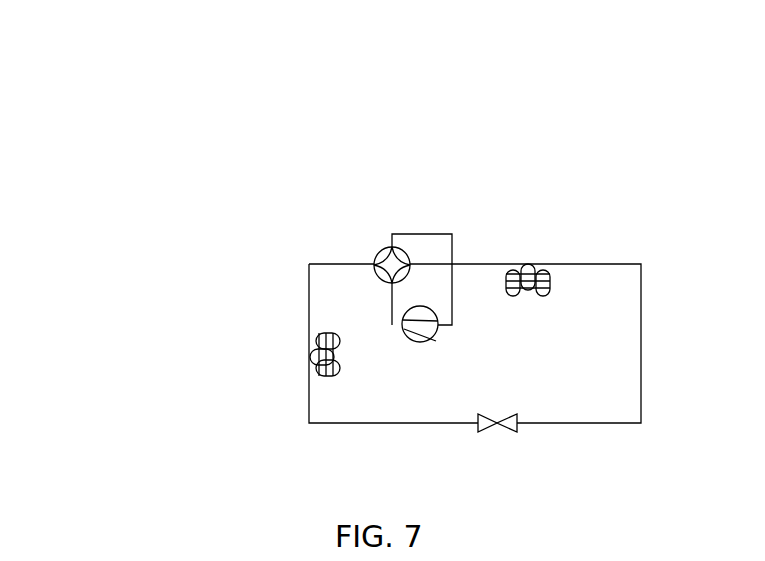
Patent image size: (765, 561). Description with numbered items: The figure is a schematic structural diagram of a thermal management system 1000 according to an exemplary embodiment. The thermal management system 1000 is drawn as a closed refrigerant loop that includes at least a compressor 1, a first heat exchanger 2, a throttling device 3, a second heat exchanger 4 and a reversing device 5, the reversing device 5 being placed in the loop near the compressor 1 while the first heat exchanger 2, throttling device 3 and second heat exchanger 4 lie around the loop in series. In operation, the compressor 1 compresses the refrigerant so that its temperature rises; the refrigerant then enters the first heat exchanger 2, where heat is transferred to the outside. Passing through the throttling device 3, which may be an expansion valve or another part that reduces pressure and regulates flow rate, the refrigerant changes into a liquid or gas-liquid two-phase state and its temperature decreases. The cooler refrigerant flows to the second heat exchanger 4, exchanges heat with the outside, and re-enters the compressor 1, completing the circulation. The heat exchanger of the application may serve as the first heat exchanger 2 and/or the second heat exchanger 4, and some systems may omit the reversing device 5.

The thermal management system 1000 is at (282, 188).
The compressor 1 is at (403, 320).
The first heat exchanger 2 is at (540, 265).
The throttling device 3 is at (515, 432).
The second heat exchanger 4 is at (315, 368).
The reversing device 5 is at (377, 254).